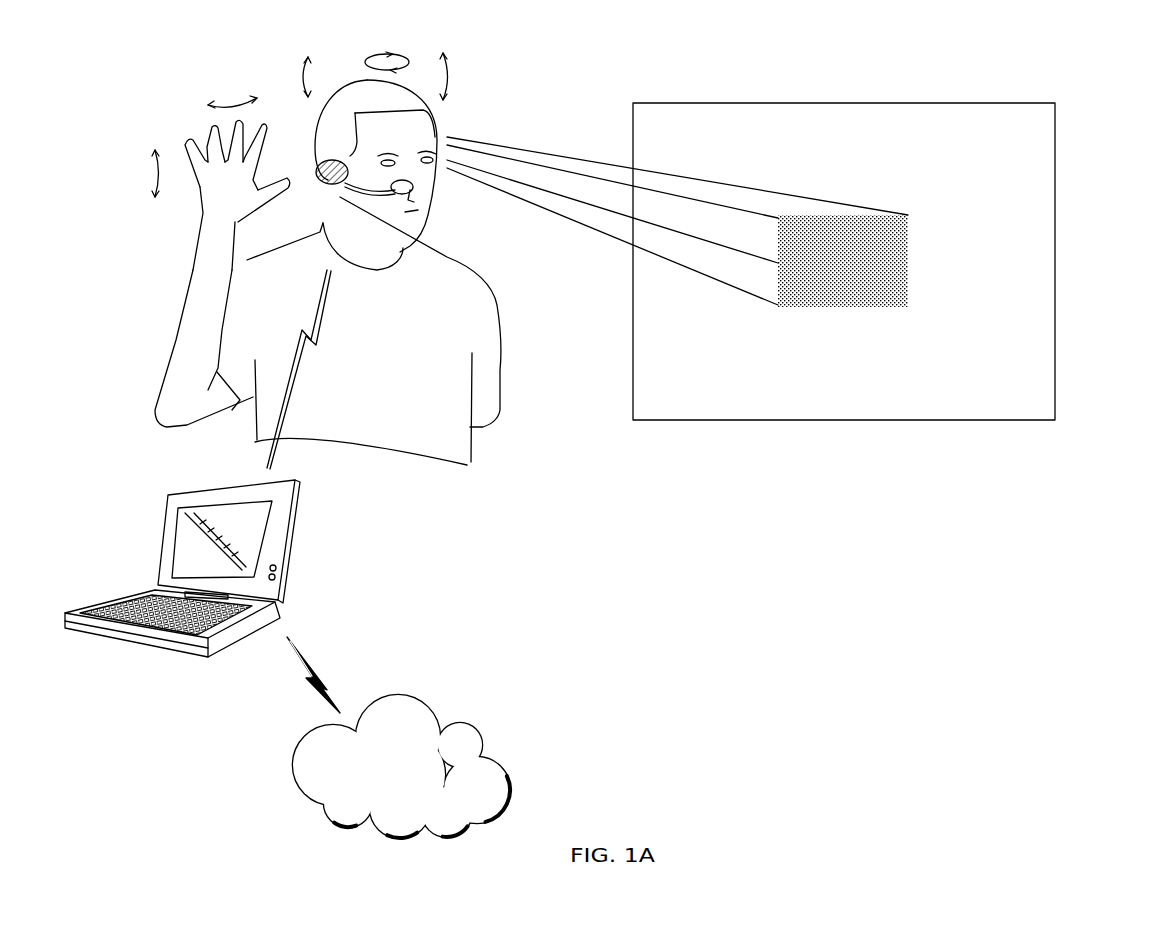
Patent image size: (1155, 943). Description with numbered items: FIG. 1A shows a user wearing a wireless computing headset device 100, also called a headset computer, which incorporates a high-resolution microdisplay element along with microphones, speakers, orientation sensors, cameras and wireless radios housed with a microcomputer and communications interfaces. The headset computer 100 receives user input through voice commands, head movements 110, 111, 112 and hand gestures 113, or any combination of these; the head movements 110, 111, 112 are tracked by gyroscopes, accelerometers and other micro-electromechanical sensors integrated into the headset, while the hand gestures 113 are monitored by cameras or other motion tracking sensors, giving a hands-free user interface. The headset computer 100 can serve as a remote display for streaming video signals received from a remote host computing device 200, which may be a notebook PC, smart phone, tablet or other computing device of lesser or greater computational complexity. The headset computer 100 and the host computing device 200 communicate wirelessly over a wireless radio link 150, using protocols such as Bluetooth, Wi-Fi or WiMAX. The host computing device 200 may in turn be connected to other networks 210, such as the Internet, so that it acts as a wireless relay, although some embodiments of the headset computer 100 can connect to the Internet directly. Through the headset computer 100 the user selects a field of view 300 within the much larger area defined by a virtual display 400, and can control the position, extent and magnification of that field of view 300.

The wireless computing headset device 100 is at (343, 194).
The head movement 110 is at (365, 62).
The head movement 111 is at (447, 80).
The head movement 112 is at (305, 78).
The hand gestures 113 is at (150, 172).
The wireless radio link 150 is at (288, 397).
The host computing device 200 is at (293, 533).
The other networks 210 is at (487, 743).
The field of view 300 is at (912, 258).
The virtual display 400 is at (723, 420).